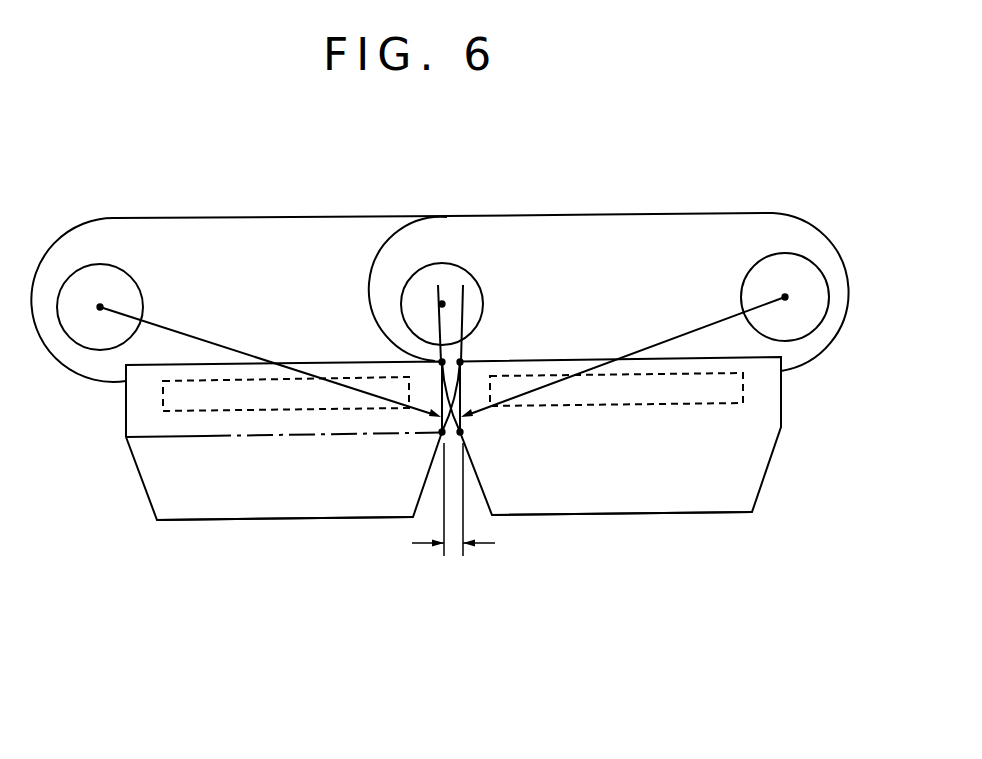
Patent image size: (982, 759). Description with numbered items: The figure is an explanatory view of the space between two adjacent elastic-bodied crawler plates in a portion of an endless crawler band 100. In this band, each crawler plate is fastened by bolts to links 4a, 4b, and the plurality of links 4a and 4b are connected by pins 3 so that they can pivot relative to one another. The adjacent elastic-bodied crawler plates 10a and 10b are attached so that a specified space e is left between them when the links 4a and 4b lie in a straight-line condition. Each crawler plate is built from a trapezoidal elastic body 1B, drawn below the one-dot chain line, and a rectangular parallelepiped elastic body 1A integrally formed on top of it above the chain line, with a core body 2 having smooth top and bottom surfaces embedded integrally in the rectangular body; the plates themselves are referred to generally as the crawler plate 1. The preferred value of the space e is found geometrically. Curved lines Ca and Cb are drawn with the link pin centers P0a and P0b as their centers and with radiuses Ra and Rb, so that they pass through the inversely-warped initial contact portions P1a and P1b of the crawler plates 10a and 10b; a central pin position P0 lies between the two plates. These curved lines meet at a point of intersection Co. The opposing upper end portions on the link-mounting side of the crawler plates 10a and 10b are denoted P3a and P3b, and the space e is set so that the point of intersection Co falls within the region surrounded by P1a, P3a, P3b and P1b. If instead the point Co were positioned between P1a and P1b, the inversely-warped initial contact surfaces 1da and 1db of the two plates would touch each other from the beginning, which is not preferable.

The endless crawler band 100 is at (728, 198).
The link 4a is at (267, 218).
The link 4b is at (625, 213).
The pin 3 is at (808, 273).
The link pin center P0a is at (100, 307).
The rotation center of intermediate pulley P0 is at (446, 300).
The link pin center P0b is at (785, 297).
The curved line Cb is at (437, 295).
The curved line Ca is at (462, 307).
The radius Ra is at (167, 328).
The radius Rb is at (660, 343).
The upper end portion P3a is at (440, 360).
The upper end portion P3b is at (462, 360).
The inversely-warped initial contact surface 1da is at (440, 392).
The inversely-warped initial contact surface 1db is at (462, 392).
The rectangular parallelepiped elastic body 1A is at (133, 412).
The trapezoidal elastic body 1B is at (143, 465).
The guide member 1 is at (160, 505).
The core body 2 is at (215, 400).
The inversely-warped initial contact portion P1a is at (440, 432).
The inversely-warped initial contact portion P1b is at (463, 430).
The point of intersection Co is at (465, 440).
The elastic-bodied crawler plate 10a is at (278, 520).
The elastic-bodied crawler plate 10b is at (675, 513).
The space e is at (457, 548).